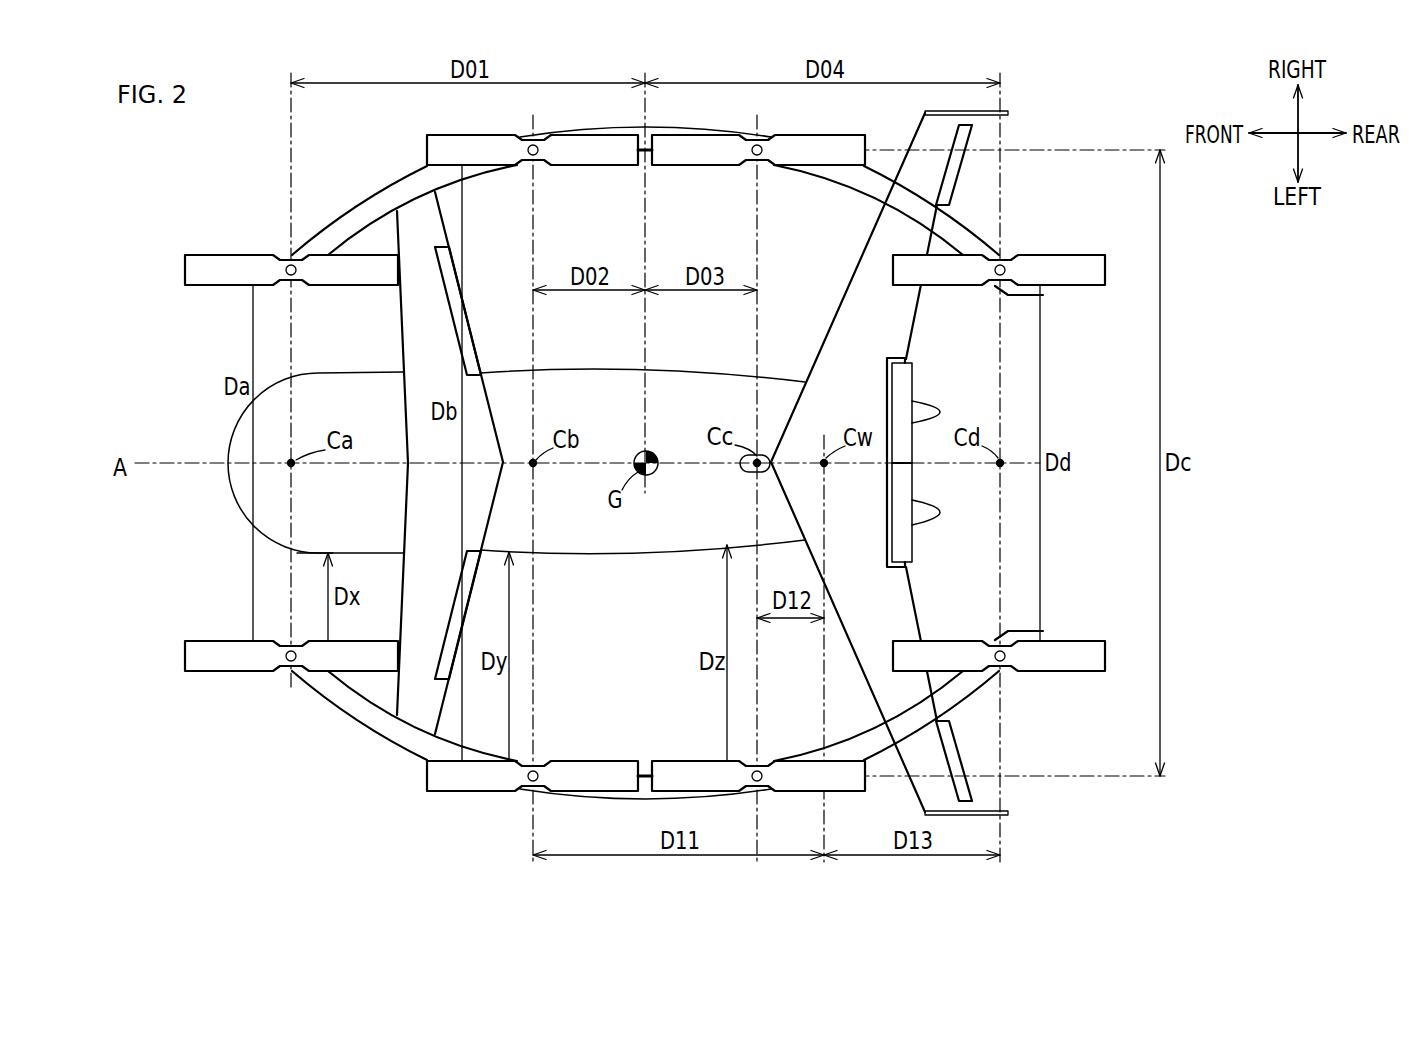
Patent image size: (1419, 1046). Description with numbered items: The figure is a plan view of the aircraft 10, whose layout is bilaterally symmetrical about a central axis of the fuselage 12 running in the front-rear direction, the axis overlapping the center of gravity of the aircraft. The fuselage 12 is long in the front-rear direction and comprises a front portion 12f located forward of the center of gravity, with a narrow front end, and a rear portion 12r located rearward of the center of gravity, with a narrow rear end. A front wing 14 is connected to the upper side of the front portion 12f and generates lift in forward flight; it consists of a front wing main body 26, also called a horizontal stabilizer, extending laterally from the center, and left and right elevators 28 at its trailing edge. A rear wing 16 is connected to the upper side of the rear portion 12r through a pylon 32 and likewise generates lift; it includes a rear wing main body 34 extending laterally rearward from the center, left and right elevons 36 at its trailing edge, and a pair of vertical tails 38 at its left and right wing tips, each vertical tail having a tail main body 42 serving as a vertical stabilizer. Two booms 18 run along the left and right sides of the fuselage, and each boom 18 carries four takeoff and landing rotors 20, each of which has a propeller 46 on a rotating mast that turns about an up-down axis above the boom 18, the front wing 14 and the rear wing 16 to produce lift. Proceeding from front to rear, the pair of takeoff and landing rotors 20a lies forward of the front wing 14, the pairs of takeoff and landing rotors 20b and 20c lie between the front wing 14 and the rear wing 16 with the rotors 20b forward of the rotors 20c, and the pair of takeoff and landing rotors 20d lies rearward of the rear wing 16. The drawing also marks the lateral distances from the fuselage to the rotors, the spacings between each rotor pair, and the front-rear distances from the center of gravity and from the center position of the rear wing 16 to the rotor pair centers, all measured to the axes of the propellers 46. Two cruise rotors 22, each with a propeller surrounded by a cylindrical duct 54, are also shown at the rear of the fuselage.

The aircraft 10 is at (143, 163).
The fuselage 12 is at (482, 433).
The front portion 12f is at (250, 476).
The rear portion 12r is at (781, 393).
The front wing 14 is at (413, 463).
The rear wing 16 is at (722, 462).
The boom 18 is at (357, 226).
The takeoff and landing rotor 20 is at (629, 464).
The takeoff and landing rotor 20a is at (262, 252).
The takeoff and landing rotor 20b is at (585, 168).
The takeoff and landing rotor 20c is at (722, 168).
The takeoff and landing rotor 20d is at (1094, 289).
The cruise rotor 22 is at (920, 383).
The front wing main body 26 is at (424, 463).
The elevator 28 is at (447, 298).
The pylon 32 is at (745, 474).
The rear wing main body 34 is at (857, 311).
The elevon 36 is at (984, 465).
The vertical tail 38 is at (994, 465).
The tail main body 42 is at (993, 118).
The propeller 46 is at (628, 464).
The cylindrical duct 54 is at (937, 462).